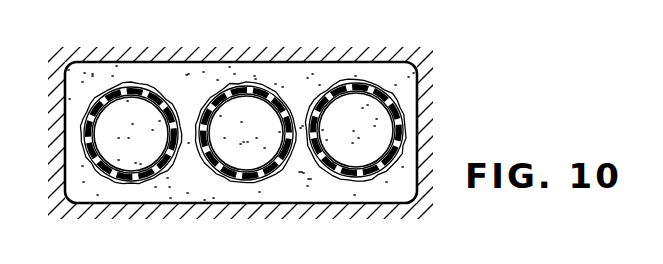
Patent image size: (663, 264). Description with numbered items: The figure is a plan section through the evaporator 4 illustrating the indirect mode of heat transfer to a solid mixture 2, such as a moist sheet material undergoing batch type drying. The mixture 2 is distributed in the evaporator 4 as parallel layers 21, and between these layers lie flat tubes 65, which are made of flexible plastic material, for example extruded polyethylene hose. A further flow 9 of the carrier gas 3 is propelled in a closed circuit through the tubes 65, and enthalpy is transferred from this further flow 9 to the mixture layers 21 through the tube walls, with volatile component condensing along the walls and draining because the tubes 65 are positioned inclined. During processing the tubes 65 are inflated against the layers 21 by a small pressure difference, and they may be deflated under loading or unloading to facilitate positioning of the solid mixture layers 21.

The carrier gas 3 is at (184, 91).
The evaporator 4 is at (230, 73).
The mixture 2 is at (318, 173).
The layers 21 is at (253, 88).
The tubes 65 is at (212, 173).
The further flow of carrier gas 9 is at (337, 120).